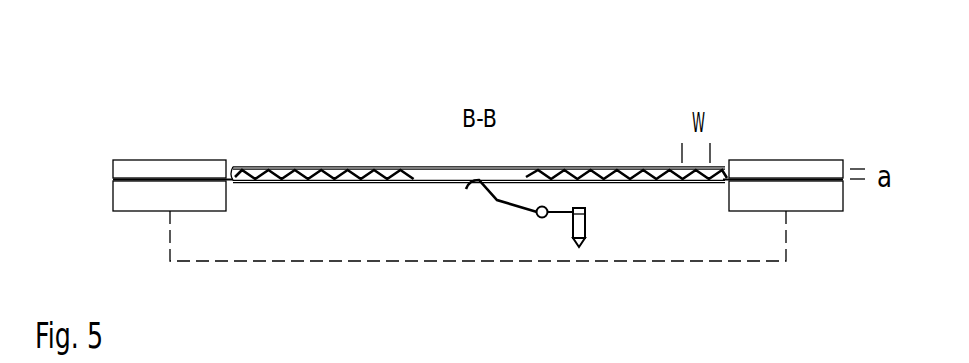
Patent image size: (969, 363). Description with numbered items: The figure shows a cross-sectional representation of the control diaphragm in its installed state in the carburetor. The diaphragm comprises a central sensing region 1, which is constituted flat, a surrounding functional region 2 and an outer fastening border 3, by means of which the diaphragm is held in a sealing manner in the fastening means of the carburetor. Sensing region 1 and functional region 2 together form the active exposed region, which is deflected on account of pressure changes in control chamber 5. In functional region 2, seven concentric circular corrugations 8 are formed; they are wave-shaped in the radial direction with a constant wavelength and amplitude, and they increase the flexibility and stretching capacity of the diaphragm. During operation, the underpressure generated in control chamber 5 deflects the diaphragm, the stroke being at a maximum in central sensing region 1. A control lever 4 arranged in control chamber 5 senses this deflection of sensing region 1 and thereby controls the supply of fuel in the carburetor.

The sensing region 1 is at (479, 102).
The functional region 2 is at (479, 102).
The fastening border 3 is at (473, 136).
The control lever 4 is at (481, 255).
The control chamber 5 is at (323, 218).
The circular corrugations 8 is at (232, 57).